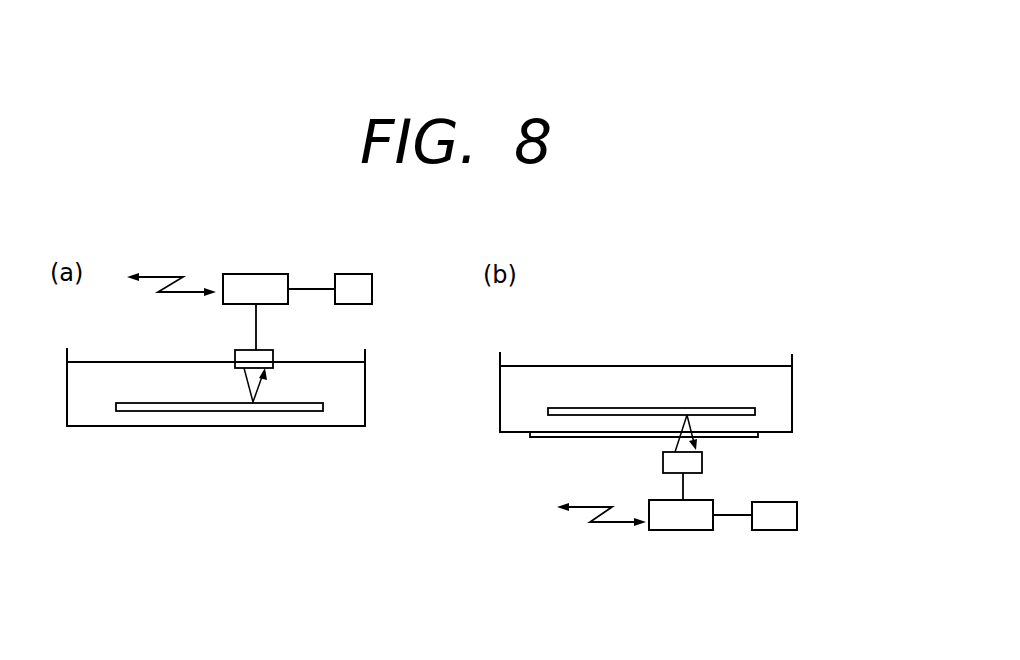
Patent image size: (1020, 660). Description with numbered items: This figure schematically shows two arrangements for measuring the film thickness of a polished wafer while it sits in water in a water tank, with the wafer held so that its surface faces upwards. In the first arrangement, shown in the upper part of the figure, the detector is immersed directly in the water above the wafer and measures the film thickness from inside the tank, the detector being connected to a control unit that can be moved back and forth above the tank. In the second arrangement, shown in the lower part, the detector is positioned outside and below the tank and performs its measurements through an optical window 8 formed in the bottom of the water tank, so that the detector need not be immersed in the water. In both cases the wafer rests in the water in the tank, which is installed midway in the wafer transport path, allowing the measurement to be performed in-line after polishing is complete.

The optical window 8 is at (560, 437).